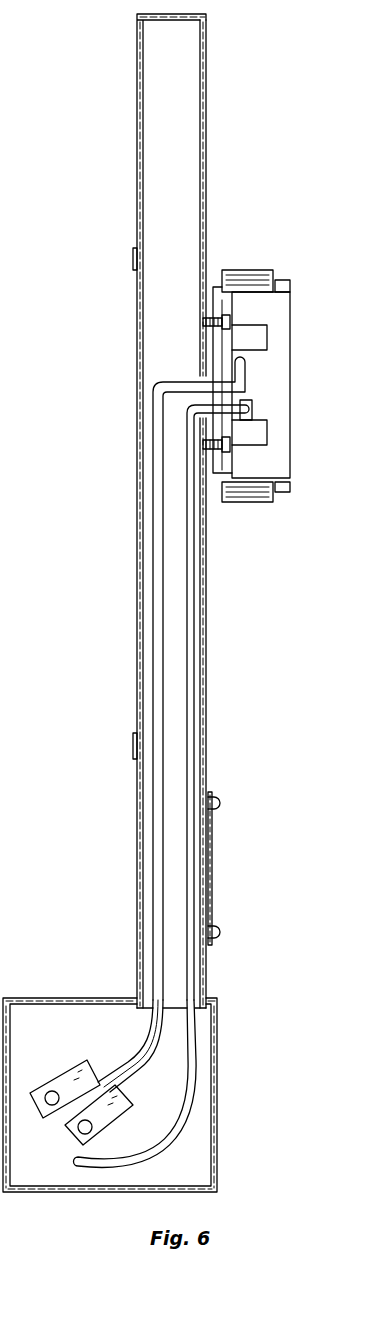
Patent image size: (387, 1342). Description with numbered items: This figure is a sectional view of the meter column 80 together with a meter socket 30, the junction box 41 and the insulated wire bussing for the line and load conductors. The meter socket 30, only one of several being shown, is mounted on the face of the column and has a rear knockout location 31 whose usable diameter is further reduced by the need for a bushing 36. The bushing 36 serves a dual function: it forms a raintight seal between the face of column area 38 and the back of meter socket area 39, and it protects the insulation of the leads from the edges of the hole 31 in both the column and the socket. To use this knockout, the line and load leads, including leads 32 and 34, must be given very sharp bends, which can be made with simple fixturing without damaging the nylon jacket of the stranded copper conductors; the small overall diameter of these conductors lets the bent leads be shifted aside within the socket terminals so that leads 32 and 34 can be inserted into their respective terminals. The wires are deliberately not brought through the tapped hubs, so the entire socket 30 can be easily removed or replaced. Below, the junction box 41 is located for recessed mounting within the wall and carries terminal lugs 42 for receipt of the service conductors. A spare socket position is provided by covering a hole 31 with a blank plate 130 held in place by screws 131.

The solar collector panel 80 is at (214, 40).
The rear knockout location 31 is at (208, 158).
The meter socket 30 is at (297, 310).
The back of meter socket area 39 is at (208, 365).
The line lead 32 is at (153, 418).
The line lead 34 is at (193, 433).
The face of column area 38 is at (205, 445).
The bushing 36 is at (235, 432).
The blank plate 130 is at (213, 830).
The screws 131 is at (218, 803).
The junction-box 41 is at (62, 998).
The terminal lugs 42 is at (68, 1132).